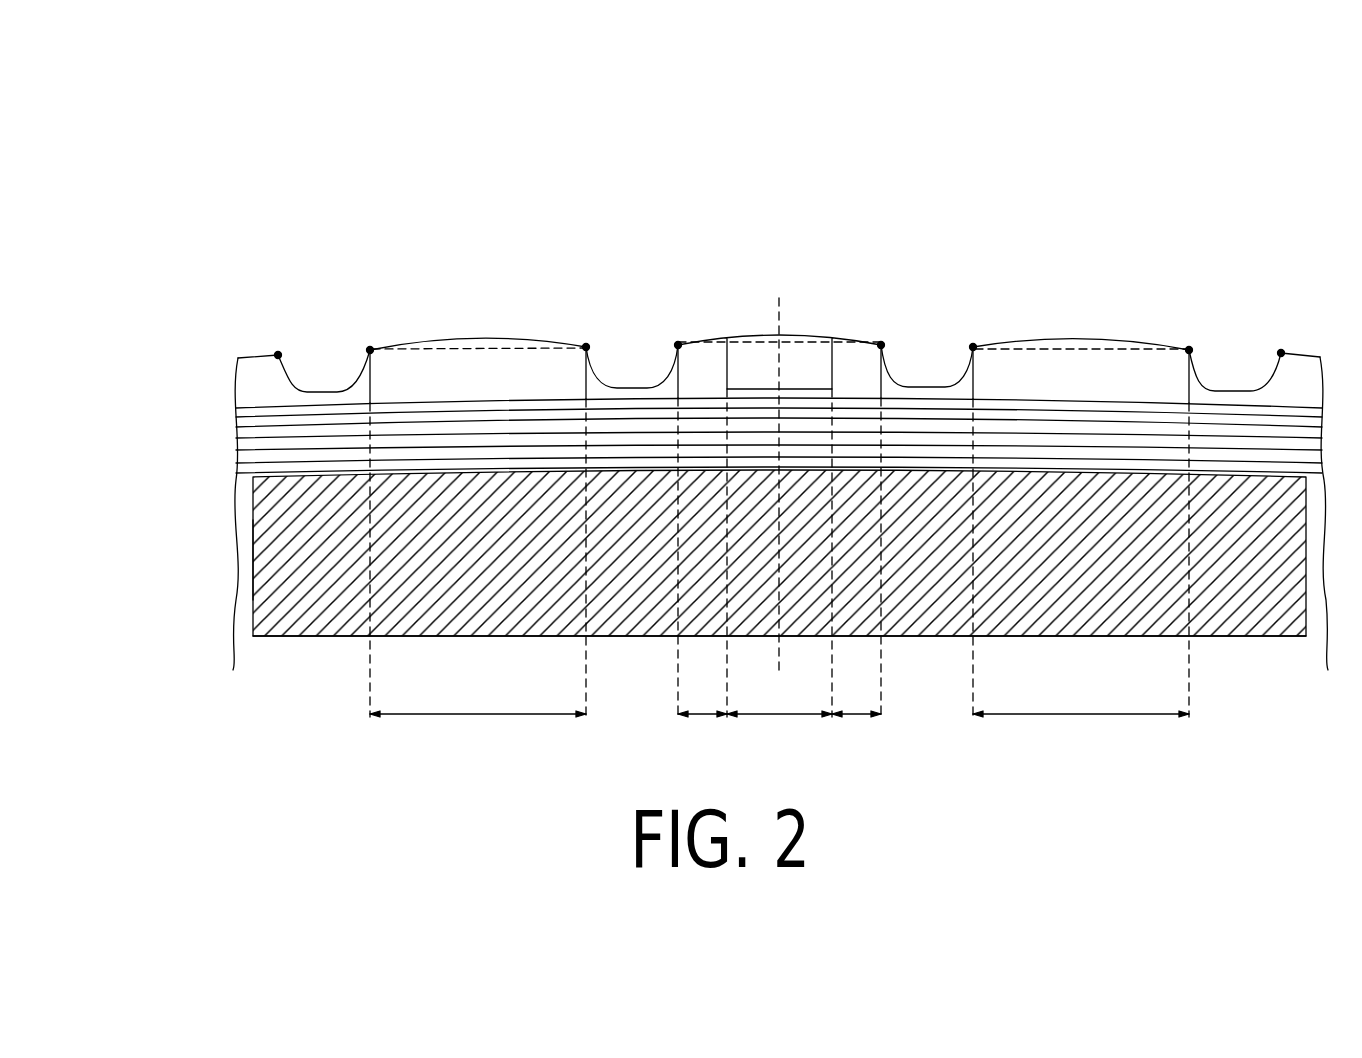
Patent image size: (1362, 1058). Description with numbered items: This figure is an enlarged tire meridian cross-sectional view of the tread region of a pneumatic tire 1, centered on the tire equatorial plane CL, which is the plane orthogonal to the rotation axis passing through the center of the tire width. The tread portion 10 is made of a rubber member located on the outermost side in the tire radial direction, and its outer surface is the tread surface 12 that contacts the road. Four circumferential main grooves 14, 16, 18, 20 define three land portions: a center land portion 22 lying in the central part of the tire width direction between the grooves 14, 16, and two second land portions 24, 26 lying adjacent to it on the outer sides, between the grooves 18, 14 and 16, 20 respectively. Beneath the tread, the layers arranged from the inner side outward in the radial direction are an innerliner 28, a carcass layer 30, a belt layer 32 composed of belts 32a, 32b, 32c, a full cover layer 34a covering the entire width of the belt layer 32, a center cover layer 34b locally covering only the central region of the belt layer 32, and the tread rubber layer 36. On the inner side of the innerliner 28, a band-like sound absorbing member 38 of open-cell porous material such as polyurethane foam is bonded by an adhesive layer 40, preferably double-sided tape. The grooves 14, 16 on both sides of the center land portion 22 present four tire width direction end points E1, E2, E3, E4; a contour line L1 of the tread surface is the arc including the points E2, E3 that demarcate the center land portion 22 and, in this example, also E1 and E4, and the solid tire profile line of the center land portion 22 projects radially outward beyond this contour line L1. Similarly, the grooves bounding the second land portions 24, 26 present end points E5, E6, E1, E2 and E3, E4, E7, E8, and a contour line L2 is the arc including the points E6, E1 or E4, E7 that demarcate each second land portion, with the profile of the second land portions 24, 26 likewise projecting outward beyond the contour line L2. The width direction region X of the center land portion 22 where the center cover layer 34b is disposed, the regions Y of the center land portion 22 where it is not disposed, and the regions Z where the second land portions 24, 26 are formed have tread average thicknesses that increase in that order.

The pneumatic tire 1 is at (872, 153).
The tread portion 10 is at (1155, 282).
The tread surface 12 is at (443, 340).
The circumferential main groove 14 is at (640, 351).
The circumferential main groove 16 is at (930, 356).
The circumferential main groove 18 is at (318, 352).
The circumferential main groove 20 is at (1240, 366).
The center land portion 22 is at (817, 337).
The second land portion 24 is at (510, 338).
The second land portion 26 is at (1043, 338).
The innerliner 28 is at (245, 500).
The carcass layer 30 is at (237, 474).
The belt layer 32 is at (714, 441).
The belt 32a is at (736, 463).
The belt 32b is at (235, 447).
The belt 32c is at (235, 423).
The full cover layer 34a is at (235, 413).
The center cover layer 34b is at (753, 390).
The tread rubber layer 36 is at (527, 370).
The band-like sound absorbing member 38 is at (268, 623).
The adhesive layer 40 is at (284, 472).
The tire width direction end point E1 is at (585, 332).
The tire width direction end point E2 is at (677, 331).
The tire width direction end point E3 is at (887, 331).
The tire width direction end point E4 is at (977, 332).
The tire width direction end point E5 is at (278, 341).
The tire width direction end point E6 is at (368, 336).
The tire width direction end point E7 is at (1188, 336).
The tire width direction end point E8 is at (1282, 340).
The contour line of the tread surface L1 is at (765, 343).
The contour line of the tread surface L2 is at (472, 347).
The tire equatorial plane CL is at (778, 468).
The tire width direction region X is at (779, 730).
The tire width direction region Y is at (779, 730).
The tire width direction region Z is at (779, 731).